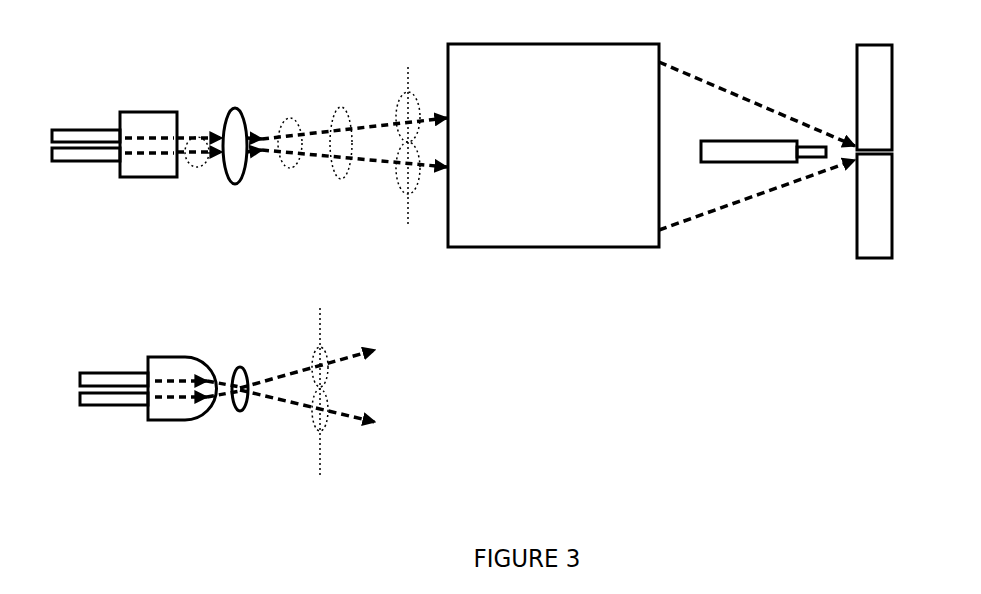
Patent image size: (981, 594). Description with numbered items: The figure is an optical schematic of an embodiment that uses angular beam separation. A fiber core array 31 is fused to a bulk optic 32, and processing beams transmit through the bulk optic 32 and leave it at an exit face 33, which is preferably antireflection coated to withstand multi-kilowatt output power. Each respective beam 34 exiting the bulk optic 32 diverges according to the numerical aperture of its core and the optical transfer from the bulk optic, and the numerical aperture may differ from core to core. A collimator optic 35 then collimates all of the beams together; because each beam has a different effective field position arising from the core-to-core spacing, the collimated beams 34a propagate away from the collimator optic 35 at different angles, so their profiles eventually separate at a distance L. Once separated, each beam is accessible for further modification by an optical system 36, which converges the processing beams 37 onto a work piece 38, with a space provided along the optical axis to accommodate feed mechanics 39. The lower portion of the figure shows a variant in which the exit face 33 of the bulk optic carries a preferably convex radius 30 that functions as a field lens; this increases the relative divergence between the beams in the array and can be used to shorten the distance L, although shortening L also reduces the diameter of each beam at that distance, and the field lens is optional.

The convex radius 30 is at (207, 412).
The fiber core array 31 is at (80, 178).
The bulk optic 32 is at (137, 167).
The exit face 33 is at (180, 128).
The beam 34 is at (203, 178).
The collimated beams 34a is at (262, 162).
The collimator optic 35 is at (233, 127).
The optical system 36 is at (482, 232).
The processing beams 37 is at (692, 242).
The work piece 38 is at (870, 243).
The feed mechanics 39 is at (748, 150).